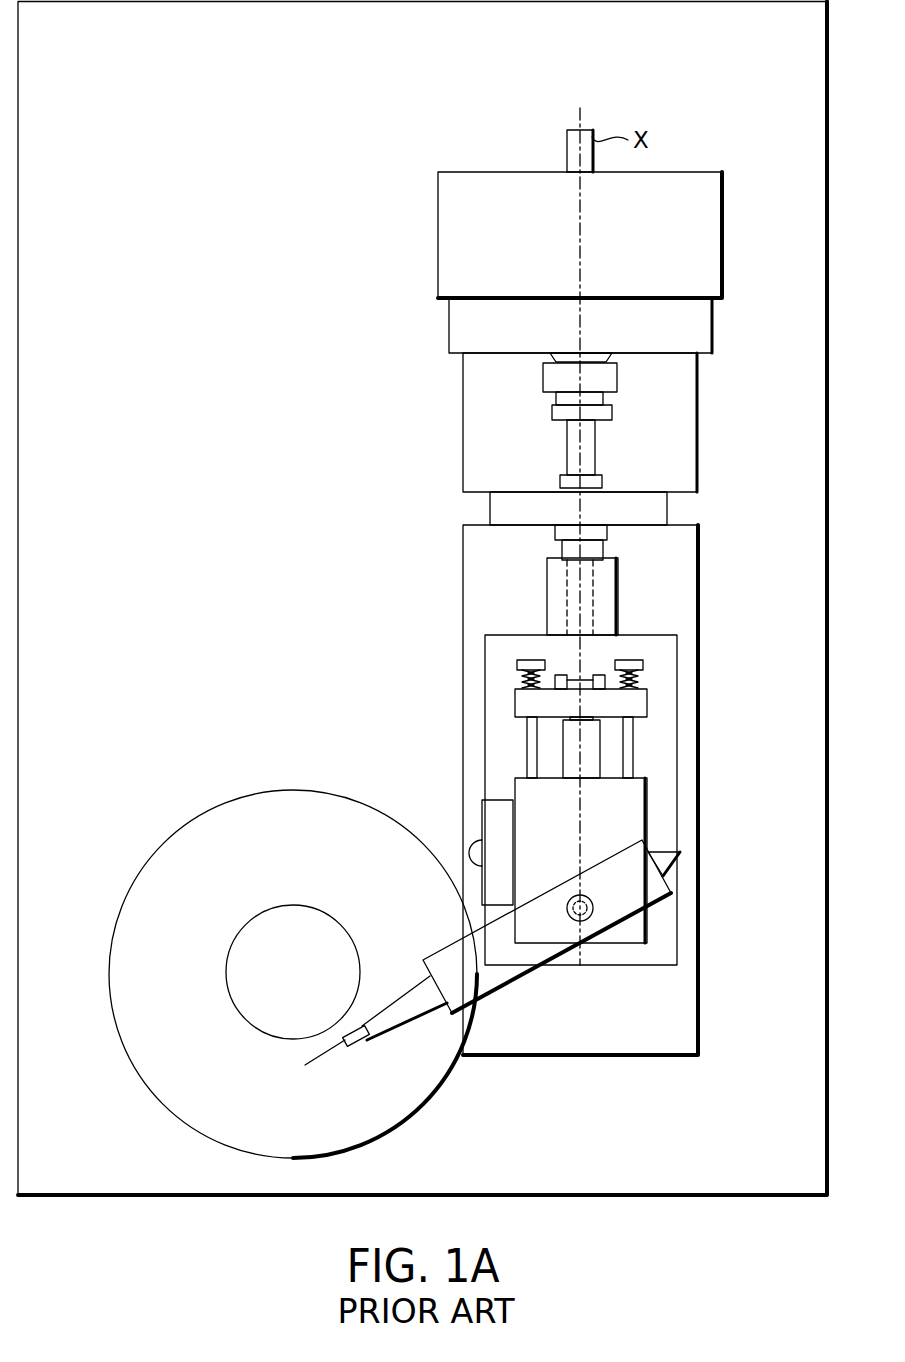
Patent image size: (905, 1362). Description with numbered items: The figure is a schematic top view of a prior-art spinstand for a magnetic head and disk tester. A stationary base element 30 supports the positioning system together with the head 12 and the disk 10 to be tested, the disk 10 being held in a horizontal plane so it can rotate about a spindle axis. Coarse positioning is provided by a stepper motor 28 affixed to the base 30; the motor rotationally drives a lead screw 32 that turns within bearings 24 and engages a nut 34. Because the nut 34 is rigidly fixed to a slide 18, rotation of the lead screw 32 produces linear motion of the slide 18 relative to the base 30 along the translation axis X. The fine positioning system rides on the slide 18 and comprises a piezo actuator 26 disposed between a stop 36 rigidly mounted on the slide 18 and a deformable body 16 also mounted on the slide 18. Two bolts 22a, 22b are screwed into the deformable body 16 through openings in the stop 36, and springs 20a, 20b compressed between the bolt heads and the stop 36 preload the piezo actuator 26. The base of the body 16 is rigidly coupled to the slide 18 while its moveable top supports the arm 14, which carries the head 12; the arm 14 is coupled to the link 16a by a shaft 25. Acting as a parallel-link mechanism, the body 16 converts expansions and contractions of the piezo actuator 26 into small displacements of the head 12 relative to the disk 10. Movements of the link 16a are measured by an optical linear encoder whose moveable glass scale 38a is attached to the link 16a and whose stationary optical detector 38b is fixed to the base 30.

The disk 10 is at (218, 828).
The head 12 is at (347, 1046).
The arm 14 is at (655, 887).
The deformable body 16 is at (648, 935).
The link 16a is at (618, 818).
The slide 18 is at (665, 736).
The spring 20a is at (517, 684).
The spring 20b is at (648, 684).
The bolt 22a is at (515, 663).
The bolt 22b is at (647, 663).
The bearings 24 is at (650, 512).
The shaft 25 is at (583, 918).
The piezo actuator 26 is at (570, 755).
The stepper motor 28 is at (455, 233).
The base element 30 is at (128, 1183).
The lead screw 32 is at (573, 578).
The nut 34 is at (549, 603).
The stop 36 is at (560, 703).
The moveable portion 38a is at (485, 818).
The stationary portion 38b is at (465, 850).